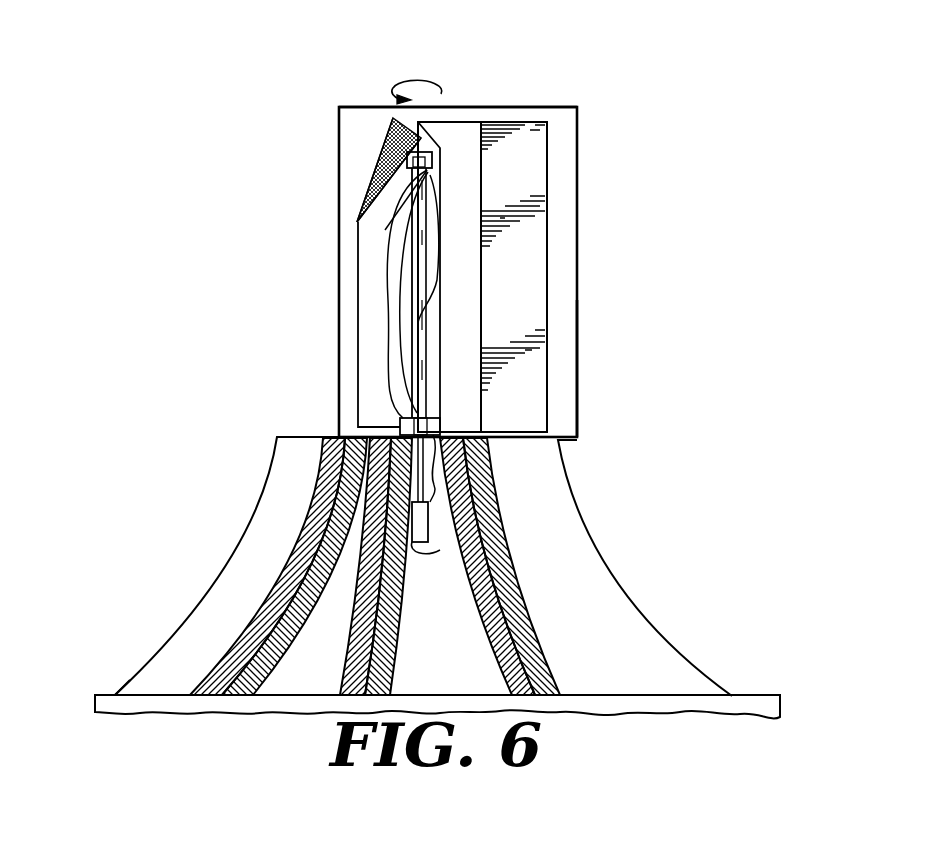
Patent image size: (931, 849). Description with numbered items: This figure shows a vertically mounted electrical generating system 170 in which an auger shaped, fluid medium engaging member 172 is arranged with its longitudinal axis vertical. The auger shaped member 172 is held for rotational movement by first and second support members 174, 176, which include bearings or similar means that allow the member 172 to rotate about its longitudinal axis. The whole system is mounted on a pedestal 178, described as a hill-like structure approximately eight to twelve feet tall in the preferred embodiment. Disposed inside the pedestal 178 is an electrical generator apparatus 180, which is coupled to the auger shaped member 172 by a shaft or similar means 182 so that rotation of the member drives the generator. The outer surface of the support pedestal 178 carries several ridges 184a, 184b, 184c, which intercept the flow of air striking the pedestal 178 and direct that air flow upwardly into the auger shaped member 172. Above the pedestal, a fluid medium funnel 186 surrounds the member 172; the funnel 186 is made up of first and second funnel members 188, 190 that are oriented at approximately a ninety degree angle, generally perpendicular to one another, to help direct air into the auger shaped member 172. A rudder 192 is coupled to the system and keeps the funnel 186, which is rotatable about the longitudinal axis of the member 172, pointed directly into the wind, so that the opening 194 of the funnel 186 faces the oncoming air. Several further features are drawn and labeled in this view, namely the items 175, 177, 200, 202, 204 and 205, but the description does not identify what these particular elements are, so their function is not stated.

The vertically mounted electrical generating system 170 is at (262, 60).
The auger shaped fluid medium engaging member 172 is at (400, 298).
The first support member 174 is at (372, 158).
The skirt foot 175 is at (114, 692).
The second support member 176 is at (400, 421).
The base plate 177 is at (95, 697).
The pedestal 178 is at (268, 473).
The electrical generator apparatus 180 is at (428, 528).
The shaft 182 is at (427, 492).
The ridge 184a is at (290, 573).
The ridge 184b is at (373, 650).
The ridge 184c is at (520, 630).
The fluid medium funnel 186 is at (377, 105).
The first funnel member 188 is at (402, 163).
The second funnel member 190 is at (378, 230).
The rudder 192 is at (548, 225).
The opening 194 is at (441, 94).
The housing side wall 200 is at (578, 390).
The reflector edge 202 is at (375, 188).
The hatched reflector 204 is at (393, 121).
The housing 205 is at (548, 107).